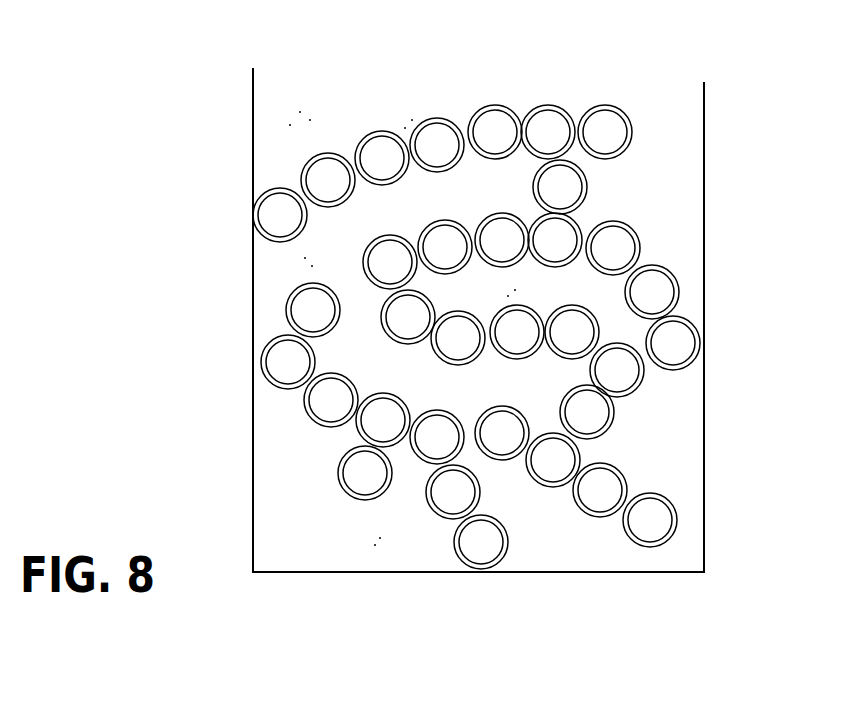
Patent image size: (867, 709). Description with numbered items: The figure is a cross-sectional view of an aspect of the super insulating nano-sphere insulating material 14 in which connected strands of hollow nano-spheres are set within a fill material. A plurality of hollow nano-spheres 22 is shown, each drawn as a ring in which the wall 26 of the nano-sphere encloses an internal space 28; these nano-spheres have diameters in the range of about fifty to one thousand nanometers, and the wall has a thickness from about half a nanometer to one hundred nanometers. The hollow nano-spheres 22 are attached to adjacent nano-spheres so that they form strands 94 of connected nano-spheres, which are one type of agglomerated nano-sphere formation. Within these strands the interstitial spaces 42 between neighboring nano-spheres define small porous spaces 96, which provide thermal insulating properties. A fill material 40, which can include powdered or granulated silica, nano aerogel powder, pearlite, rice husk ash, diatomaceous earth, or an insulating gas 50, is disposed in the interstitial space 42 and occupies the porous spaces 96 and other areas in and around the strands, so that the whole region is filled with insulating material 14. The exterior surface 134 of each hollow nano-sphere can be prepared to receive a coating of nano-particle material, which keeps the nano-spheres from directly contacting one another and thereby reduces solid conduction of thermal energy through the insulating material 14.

The insulating material 14 is at (240, 402).
The hollow nano-spheres 22 is at (470, 107).
The wall 26 is at (643, 525).
The internal space 28 is at (633, 538).
The fill material 40 is at (370, 550).
The interstitial space 42 is at (298, 260).
The insulating gas 50 is at (302, 105).
The strands 94 is at (403, 123).
The porous spaces 96 is at (520, 282).
The exterior surface 134 is at (440, 518).